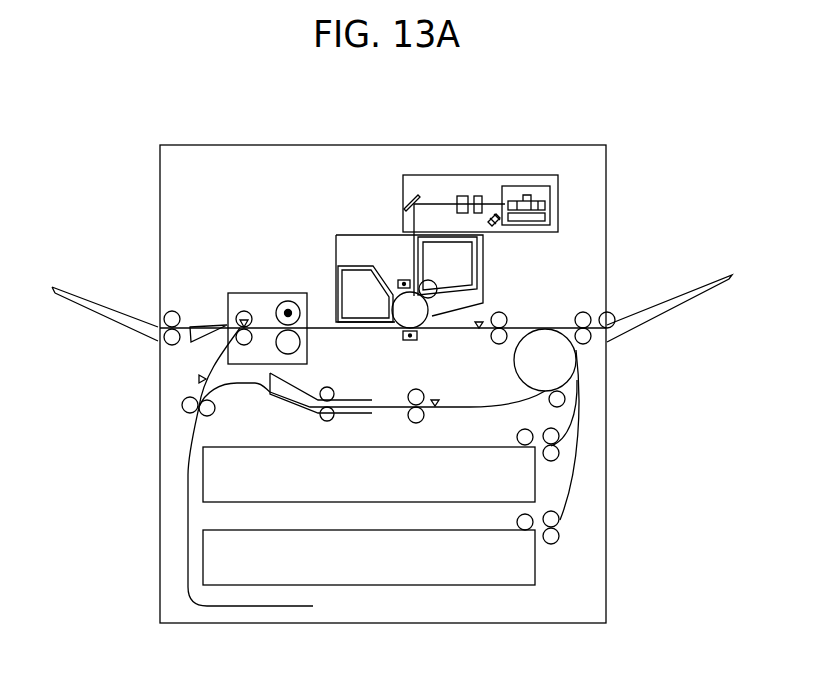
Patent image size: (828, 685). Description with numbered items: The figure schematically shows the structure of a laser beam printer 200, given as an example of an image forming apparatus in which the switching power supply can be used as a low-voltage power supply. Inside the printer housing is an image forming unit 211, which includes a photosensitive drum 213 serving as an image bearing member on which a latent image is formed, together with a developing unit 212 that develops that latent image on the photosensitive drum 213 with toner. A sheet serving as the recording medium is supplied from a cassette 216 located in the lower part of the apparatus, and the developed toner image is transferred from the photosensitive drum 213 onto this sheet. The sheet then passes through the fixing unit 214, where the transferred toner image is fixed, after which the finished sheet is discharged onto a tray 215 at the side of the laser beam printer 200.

The laser beam printer 200 is at (326, 157).
The image forming unit 211 is at (363, 235).
The developing unit 212 is at (434, 284).
The photosensitive drum 213 is at (418, 310).
The fixing unit 214 is at (272, 293).
The tray 215 is at (107, 312).
The cassette 216 is at (525, 567).